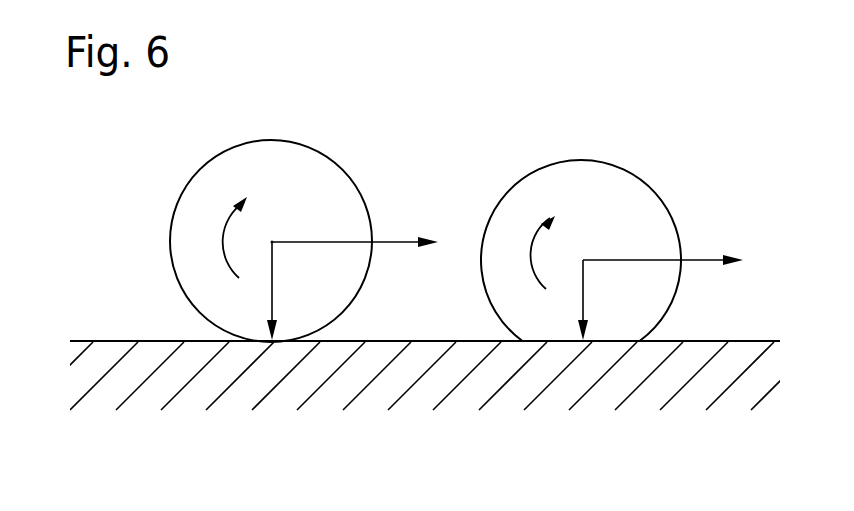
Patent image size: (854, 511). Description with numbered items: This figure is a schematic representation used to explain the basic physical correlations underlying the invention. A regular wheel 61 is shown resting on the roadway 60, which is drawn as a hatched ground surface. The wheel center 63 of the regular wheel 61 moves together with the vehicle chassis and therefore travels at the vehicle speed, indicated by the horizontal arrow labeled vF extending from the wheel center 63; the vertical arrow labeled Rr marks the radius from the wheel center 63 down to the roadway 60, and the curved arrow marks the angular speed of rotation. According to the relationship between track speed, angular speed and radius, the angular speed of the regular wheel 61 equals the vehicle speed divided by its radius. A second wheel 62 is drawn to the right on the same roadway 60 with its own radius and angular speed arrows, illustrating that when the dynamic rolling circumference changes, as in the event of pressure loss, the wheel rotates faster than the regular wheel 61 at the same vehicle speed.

The roadway 60 is at (109, 326).
The regular wheel 61 is at (205, 182).
The sliding wheel 62 is at (637, 193).
The wheel center 63 is at (272, 242).